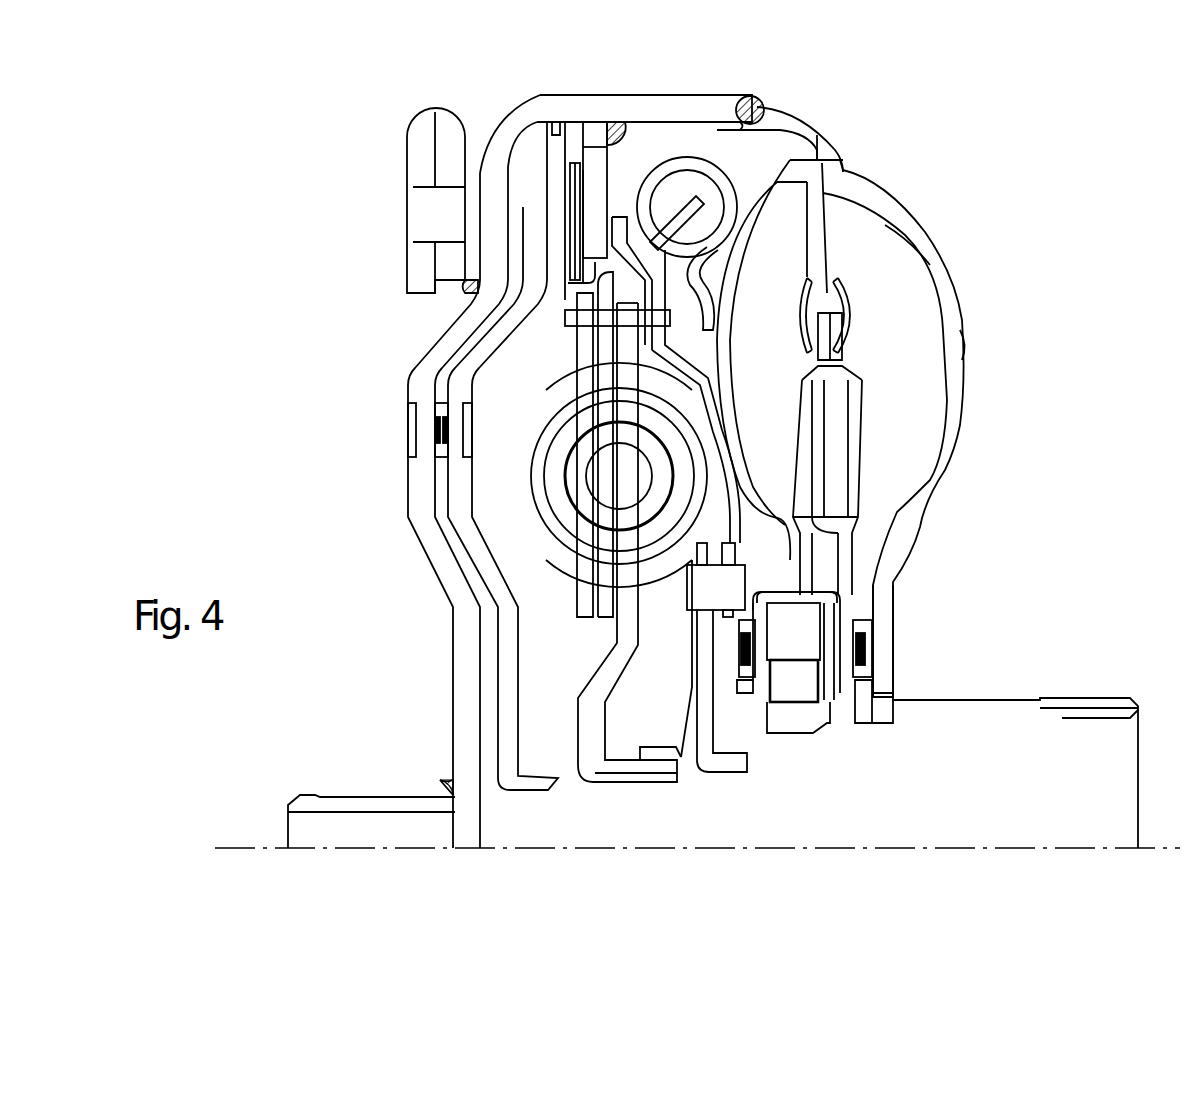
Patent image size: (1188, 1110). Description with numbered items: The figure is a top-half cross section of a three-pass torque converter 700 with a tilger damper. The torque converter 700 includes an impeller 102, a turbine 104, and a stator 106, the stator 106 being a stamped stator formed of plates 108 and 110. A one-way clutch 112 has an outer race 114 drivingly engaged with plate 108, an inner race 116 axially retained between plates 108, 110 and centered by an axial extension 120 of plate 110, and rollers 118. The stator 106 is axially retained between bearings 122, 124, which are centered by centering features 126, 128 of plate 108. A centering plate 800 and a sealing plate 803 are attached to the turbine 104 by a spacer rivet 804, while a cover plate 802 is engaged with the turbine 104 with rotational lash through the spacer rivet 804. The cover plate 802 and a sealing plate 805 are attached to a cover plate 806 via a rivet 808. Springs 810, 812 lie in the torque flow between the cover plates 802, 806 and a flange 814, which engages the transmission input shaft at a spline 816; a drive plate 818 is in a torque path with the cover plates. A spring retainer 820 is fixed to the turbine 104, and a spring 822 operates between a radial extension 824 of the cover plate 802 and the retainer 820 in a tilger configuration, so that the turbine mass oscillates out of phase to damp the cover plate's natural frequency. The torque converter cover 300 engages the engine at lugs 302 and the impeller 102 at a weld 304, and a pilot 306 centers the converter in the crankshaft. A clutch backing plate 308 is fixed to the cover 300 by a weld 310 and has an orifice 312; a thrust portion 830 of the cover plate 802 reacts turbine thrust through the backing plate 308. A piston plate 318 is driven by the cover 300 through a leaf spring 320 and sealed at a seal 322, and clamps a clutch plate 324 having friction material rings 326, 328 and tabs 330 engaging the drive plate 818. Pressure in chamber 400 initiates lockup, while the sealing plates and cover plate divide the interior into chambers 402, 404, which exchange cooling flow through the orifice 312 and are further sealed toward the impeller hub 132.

The three-pass torque converter 700 is at (1012, 140).
The torque converter cover 300 is at (718, 99).
The lugs 302 is at (437, 118).
The weld 304 is at (760, 103).
The pilot 306 is at (307, 803).
The clutch backing plate 308 is at (593, 143).
The weld 310 is at (622, 116).
The orifice 312 is at (553, 120).
The piston plate 318 is at (470, 540).
The leaf spring 320 is at (443, 413).
The seal 322 is at (502, 166).
The clutch plate 324 is at (578, 173).
The friction material ring 326 is at (568, 221).
The friction material ring 328 is at (577, 187).
The tabs 330 is at (567, 273).
The chamber 400 is at (508, 226).
The chamber 402 is at (649, 653).
The chamber 404 is at (827, 230).
The centering plate 800 is at (676, 738).
The cover plate 802 is at (722, 552).
The sealing plate 803 is at (735, 420).
The spacer rivet 804 is at (699, 599).
The sealing plate 805 is at (550, 263).
The cover plate 806 is at (577, 603).
The rivet 808 is at (566, 315).
The spring 810 is at (590, 482).
The spring 812 is at (580, 415).
The flange 814 is at (598, 692).
The spline 816 is at (650, 800).
The drive plate 818 is at (600, 345).
The spring retainer 820 is at (840, 160).
The spring 822 is at (803, 148).
The radial extension 824 is at (697, 122).
The thrust portion 830 is at (617, 222).
The impeller 102 is at (862, 284).
The turbine 104 is at (749, 284).
The stator 106 is at (884, 404).
The plate 108 is at (858, 463).
The plate 110 is at (803, 445).
The one-way clutch 112 is at (842, 741).
The outer race 114 is at (775, 656).
The inner race 116 is at (777, 730).
The rollers 118 is at (777, 696).
The axial extension 120 is at (860, 692).
The bearing 122 is at (888, 642).
The bearing 124 is at (875, 568).
The centering feature 126 is at (884, 714).
The centering feature 128 is at (766, 704).
The impeller hub 132 is at (1018, 707).